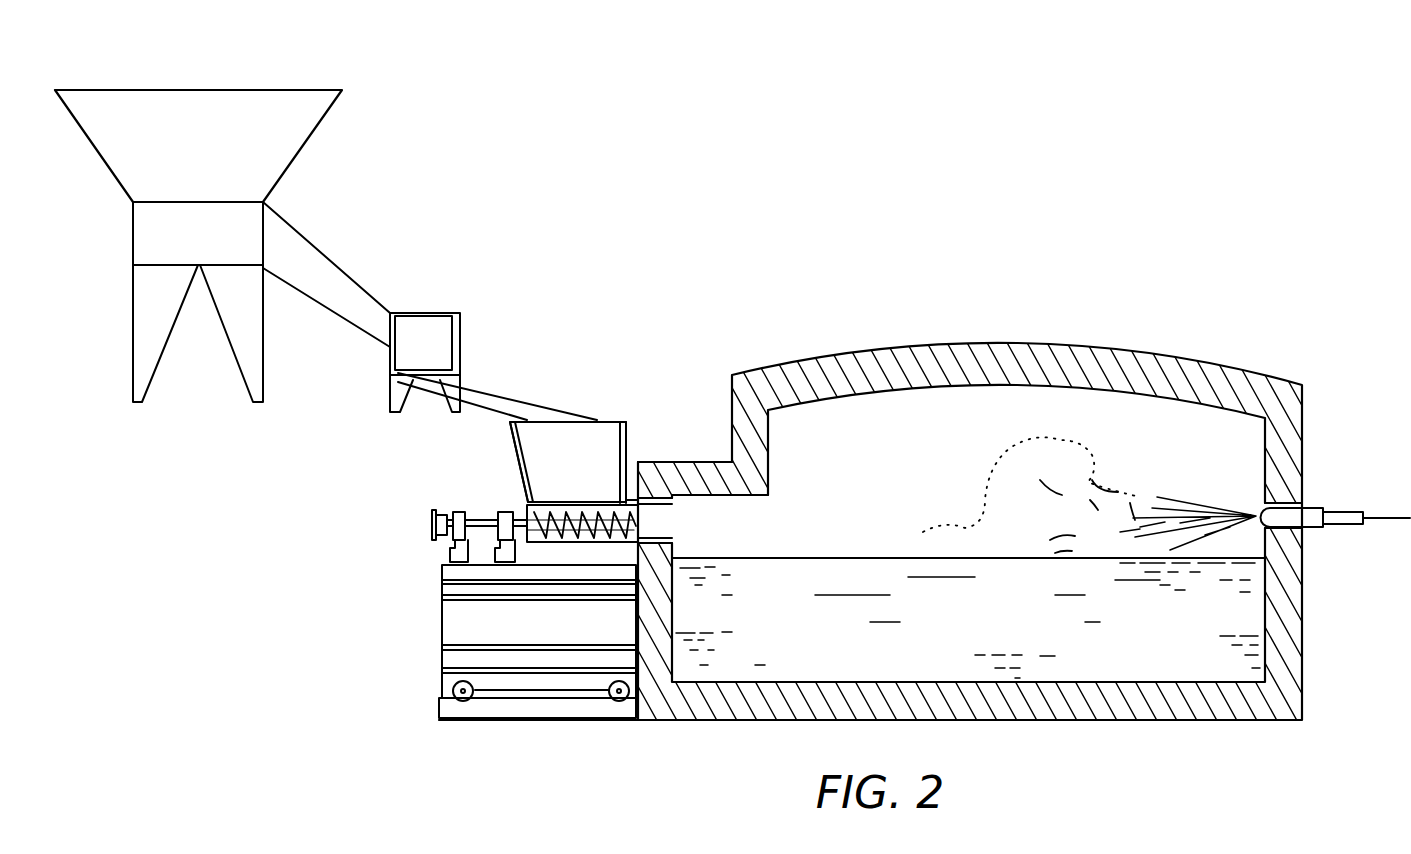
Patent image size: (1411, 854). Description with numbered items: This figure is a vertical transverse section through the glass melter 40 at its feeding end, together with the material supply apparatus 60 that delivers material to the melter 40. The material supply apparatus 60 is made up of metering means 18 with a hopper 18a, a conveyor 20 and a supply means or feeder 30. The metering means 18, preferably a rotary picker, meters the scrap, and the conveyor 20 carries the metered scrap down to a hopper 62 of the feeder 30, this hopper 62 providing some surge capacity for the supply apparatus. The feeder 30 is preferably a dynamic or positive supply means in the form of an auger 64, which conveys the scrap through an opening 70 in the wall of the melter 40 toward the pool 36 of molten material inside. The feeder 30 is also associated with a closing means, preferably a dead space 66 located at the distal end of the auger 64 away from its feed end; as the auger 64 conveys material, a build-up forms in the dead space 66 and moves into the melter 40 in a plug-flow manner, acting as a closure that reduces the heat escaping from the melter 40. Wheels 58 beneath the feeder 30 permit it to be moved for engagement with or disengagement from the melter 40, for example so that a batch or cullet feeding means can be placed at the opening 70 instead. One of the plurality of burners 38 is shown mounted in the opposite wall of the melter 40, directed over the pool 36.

The metering means 18 is at (208, 248).
The hopper 18a is at (313, 140).
The conveyor 20 is at (313, 247).
The feeder 30 is at (518, 467).
The pool 36 is at (1002, 626).
The burner 38 is at (1308, 508).
The melter 40 is at (1302, 393).
The wheels 58 is at (463, 701).
The material supply apparatus 60 is at (508, 423).
The hopper 62 is at (630, 432).
The auger 64 is at (598, 530).
The dead space 66 is at (660, 523).
The opening 70 is at (667, 497).